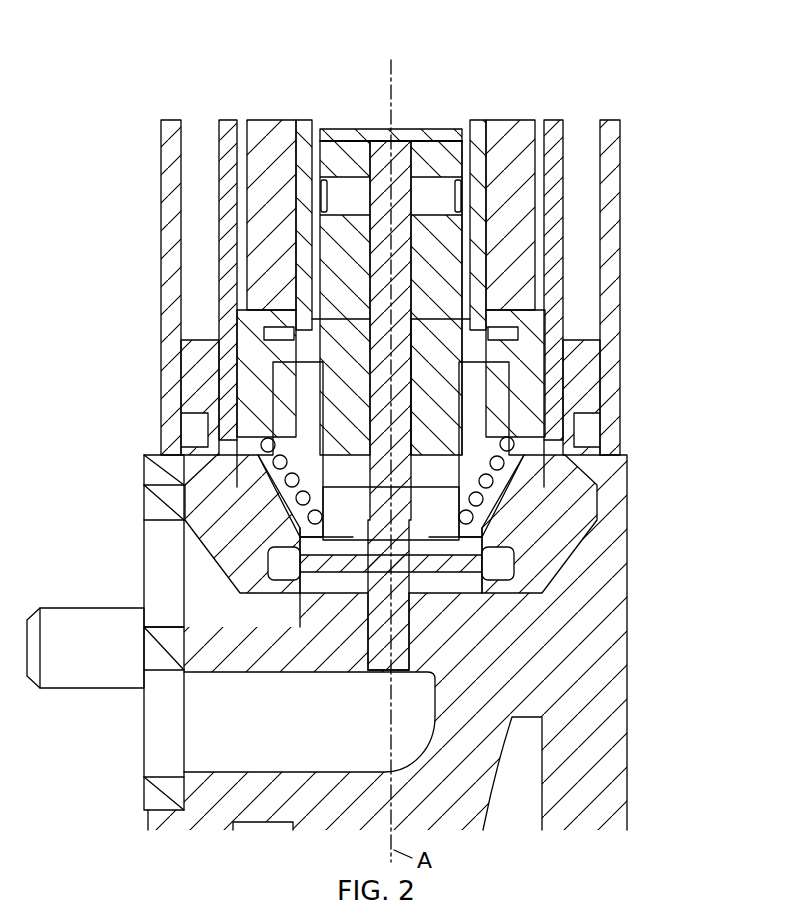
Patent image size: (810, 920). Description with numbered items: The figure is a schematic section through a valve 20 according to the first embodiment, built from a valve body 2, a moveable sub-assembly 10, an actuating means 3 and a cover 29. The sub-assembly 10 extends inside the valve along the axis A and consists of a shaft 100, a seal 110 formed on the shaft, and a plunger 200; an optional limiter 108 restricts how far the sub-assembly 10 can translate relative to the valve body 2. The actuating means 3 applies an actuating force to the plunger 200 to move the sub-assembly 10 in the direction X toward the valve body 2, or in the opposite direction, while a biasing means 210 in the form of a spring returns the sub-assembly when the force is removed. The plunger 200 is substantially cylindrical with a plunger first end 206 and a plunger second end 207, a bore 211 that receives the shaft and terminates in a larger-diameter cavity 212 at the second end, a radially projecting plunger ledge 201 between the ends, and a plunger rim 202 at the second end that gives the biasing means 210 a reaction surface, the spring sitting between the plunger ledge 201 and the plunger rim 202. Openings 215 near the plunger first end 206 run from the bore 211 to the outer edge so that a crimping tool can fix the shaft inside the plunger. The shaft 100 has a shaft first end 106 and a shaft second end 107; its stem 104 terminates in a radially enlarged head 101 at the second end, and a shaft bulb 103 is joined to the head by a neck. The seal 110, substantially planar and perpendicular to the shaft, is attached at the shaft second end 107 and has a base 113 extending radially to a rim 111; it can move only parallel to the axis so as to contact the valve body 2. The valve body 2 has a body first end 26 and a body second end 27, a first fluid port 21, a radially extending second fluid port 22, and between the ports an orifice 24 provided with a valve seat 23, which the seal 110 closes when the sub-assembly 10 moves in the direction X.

The valve 20 is at (150, 83).
The moveable sub-assembly 10 is at (463, 97).
The plunger first end 206 is at (470, 130).
The shaft first end 106 is at (405, 143).
The openings 215 is at (335, 196).
The plunger 200 is at (450, 237).
The bore 211 is at (470, 300).
The stem 104 is at (433, 322).
The body first end 26 is at (548, 355).
The shaft 100 is at (398, 413).
The biasing means 210 is at (512, 432).
The cavity 212 is at (540, 478).
The head 101 is at (455, 512).
The plunger second end 207 is at (430, 545).
The shaft second end 107 is at (420, 563).
The valve body 2 is at (610, 622).
The seal 110 is at (405, 572).
The valve seat 23 is at (318, 635).
The body second end 27 is at (633, 814).
The cover 29 is at (168, 211).
The actuating means 3 is at (262, 263).
The plunger ledge 201 is at (297, 398).
The limiter 108 is at (258, 487).
The plunger rim 202 is at (292, 530).
The second fluid port 22 is at (162, 548).
The rim 111 is at (267, 565).
The base 113 is at (305, 575).
The orifice 24 is at (363, 560).
The shaft bulb 103 is at (398, 640).
The first fluid port 21 is at (160, 753).